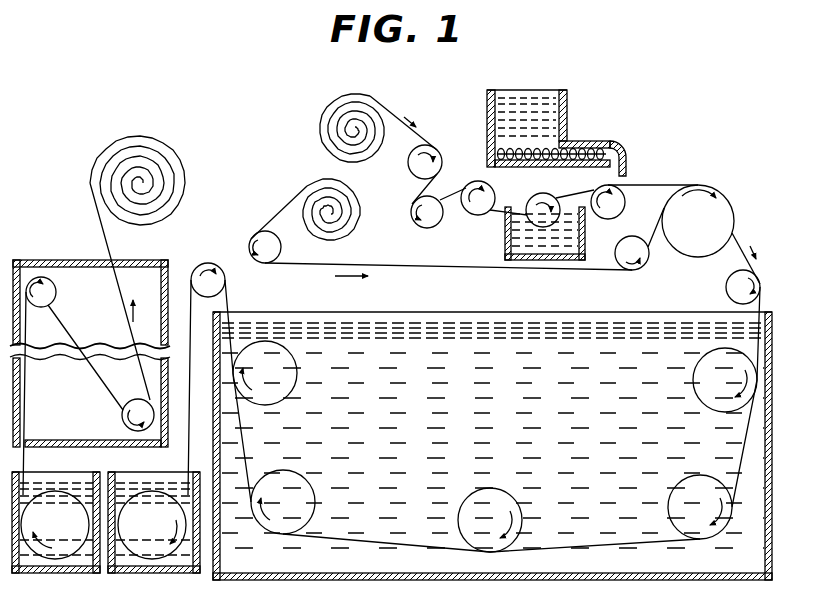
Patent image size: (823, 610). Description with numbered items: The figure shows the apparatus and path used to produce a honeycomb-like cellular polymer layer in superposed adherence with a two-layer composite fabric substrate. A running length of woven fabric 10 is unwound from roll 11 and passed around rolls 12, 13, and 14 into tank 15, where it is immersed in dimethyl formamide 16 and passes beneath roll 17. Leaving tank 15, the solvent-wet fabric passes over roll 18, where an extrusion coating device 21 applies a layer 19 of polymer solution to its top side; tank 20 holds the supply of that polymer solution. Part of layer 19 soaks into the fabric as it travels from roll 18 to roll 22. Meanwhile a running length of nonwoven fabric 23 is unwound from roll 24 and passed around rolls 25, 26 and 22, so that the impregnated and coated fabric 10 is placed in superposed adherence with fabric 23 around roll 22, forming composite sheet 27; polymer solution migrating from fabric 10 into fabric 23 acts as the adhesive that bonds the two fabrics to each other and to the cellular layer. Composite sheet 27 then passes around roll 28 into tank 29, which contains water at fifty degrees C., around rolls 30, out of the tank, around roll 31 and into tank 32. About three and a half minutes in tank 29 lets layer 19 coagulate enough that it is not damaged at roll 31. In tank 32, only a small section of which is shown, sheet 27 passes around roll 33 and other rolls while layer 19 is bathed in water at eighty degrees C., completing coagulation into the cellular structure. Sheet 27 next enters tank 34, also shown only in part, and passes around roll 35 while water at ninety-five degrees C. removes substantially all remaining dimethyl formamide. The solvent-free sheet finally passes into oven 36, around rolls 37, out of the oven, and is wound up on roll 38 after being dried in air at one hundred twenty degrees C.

The woven fabric 10 is at (403, 113).
The roll 11 is at (357, 98).
The roll 12 is at (437, 150).
The roll 13 is at (437, 200).
The roll 14 is at (495, 190).
The tank 15 is at (505, 236).
The dimethyl formamide 16 is at (575, 242).
The roll 17 is at (550, 200).
The roll 18 is at (625, 202).
The layer of polymer solution 19 is at (643, 182).
The tank 20 is at (552, 118).
The extrusion coating device 21 is at (608, 150).
The roll 22 is at (727, 208).
The nonwoven fabric 23 is at (280, 206).
The roll 24 is at (355, 206).
The roll 25 is at (250, 247).
The roll 26 is at (640, 268).
The composite sheet 27 is at (750, 240).
The roll 28 is at (760, 279).
The tank 29 is at (772, 340).
The rolls 30 is at (256, 383).
The roll 31 is at (225, 281).
The tank 32 is at (163, 568).
The roll 33 is at (143, 535).
The tank 34 is at (42, 566).
The roll 35 is at (46, 535).
The oven 36 is at (152, 350).
The rolls 37 is at (56, 297).
The roll 38 is at (186, 156).